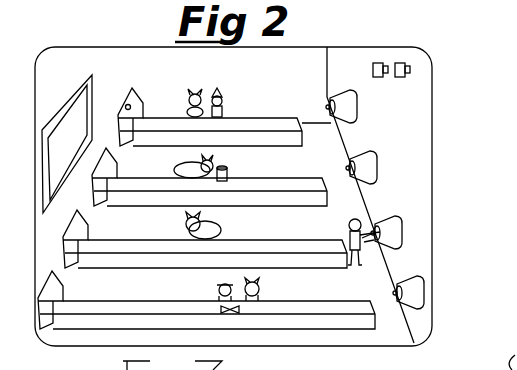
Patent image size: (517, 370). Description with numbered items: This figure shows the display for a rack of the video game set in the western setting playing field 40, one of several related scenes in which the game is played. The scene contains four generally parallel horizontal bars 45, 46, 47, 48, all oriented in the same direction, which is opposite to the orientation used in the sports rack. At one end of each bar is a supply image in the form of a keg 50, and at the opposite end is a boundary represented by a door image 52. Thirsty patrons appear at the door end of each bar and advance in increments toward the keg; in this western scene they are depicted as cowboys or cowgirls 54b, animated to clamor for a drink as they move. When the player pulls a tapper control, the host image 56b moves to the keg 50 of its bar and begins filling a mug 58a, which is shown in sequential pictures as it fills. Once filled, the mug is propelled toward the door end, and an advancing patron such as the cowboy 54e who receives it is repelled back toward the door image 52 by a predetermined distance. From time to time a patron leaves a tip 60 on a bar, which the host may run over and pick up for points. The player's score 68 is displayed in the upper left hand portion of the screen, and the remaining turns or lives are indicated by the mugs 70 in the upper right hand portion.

The western setting playing field 40 is at (76, 44).
The player's score 68 is at (117, 47).
The mugs indicating remaining turns 70 is at (398, 62).
The keg 50 is at (369, 153).
The door image 52 is at (130, 106).
The horizontal bar 48 is at (167, 142).
The horizontal bar 47 is at (147, 202).
The horizontal bar 46 is at (125, 262).
The horizontal bar 45 is at (115, 322).
The cowboys or cowgirls 54b is at (215, 97).
The cowboy 54e is at (212, 160).
The host image 56b is at (360, 220).
The filling mug 58a is at (376, 254).
The tip 60 is at (229, 309).